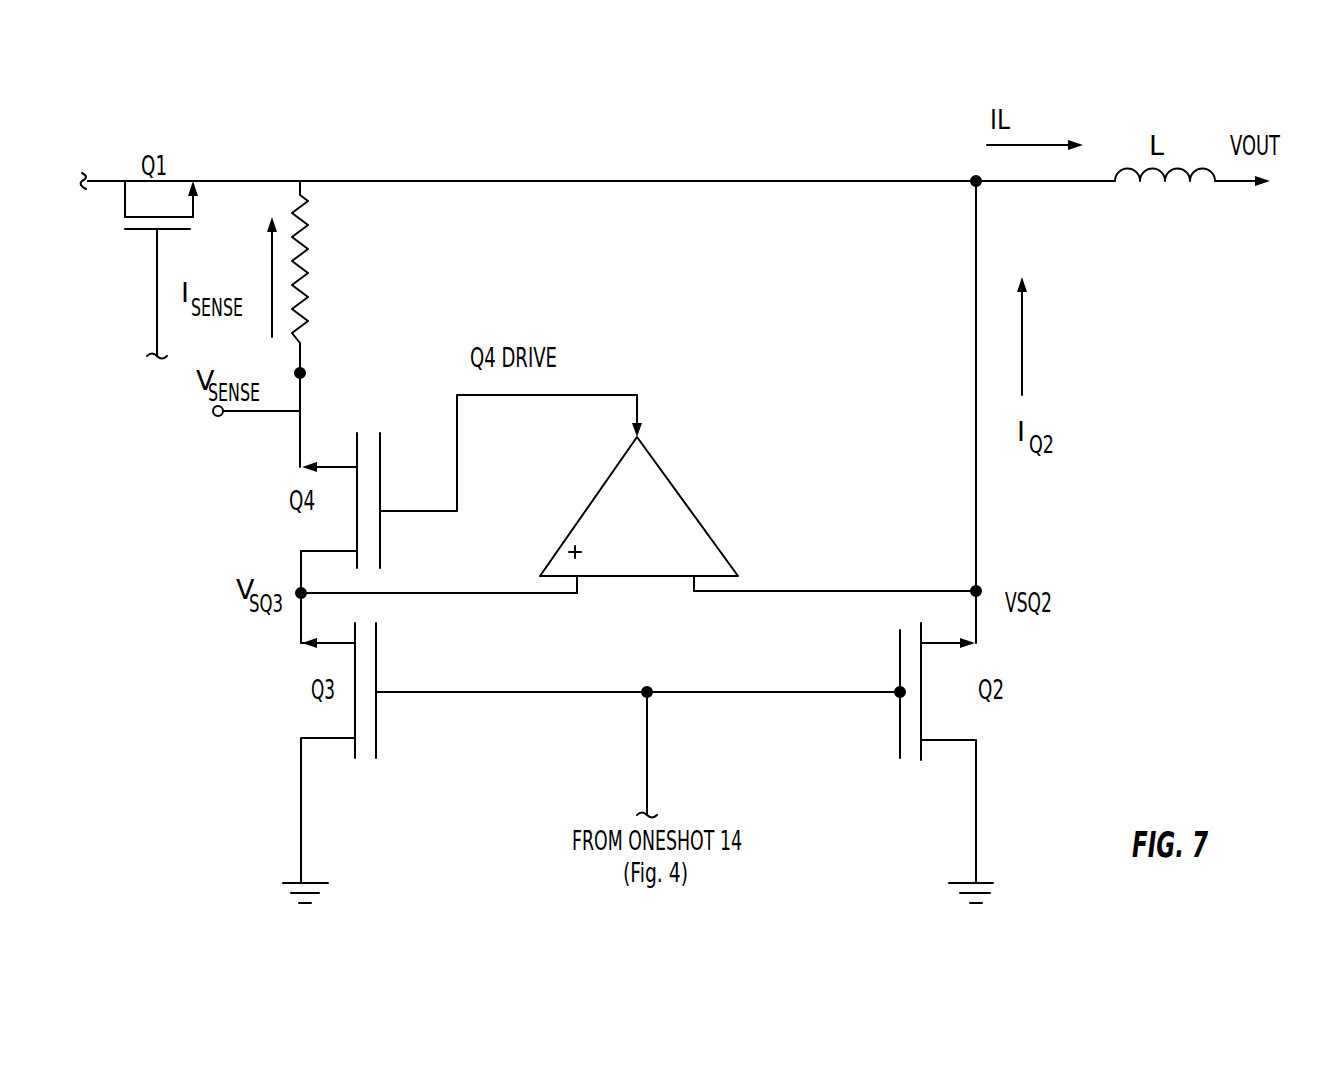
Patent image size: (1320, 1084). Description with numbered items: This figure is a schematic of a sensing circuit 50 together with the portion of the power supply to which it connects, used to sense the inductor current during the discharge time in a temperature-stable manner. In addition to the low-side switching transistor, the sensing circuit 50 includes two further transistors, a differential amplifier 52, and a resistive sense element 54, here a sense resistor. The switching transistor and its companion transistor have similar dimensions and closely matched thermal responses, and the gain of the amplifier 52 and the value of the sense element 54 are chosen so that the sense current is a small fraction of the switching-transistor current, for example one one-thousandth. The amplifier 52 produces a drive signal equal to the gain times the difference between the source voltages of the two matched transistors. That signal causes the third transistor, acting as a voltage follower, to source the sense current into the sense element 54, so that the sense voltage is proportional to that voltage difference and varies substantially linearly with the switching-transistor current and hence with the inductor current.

The sensing circuit 50 is at (872, 150).
The differential amplifier 52 is at (676, 487).
The resistive sense element 54 is at (303, 267).